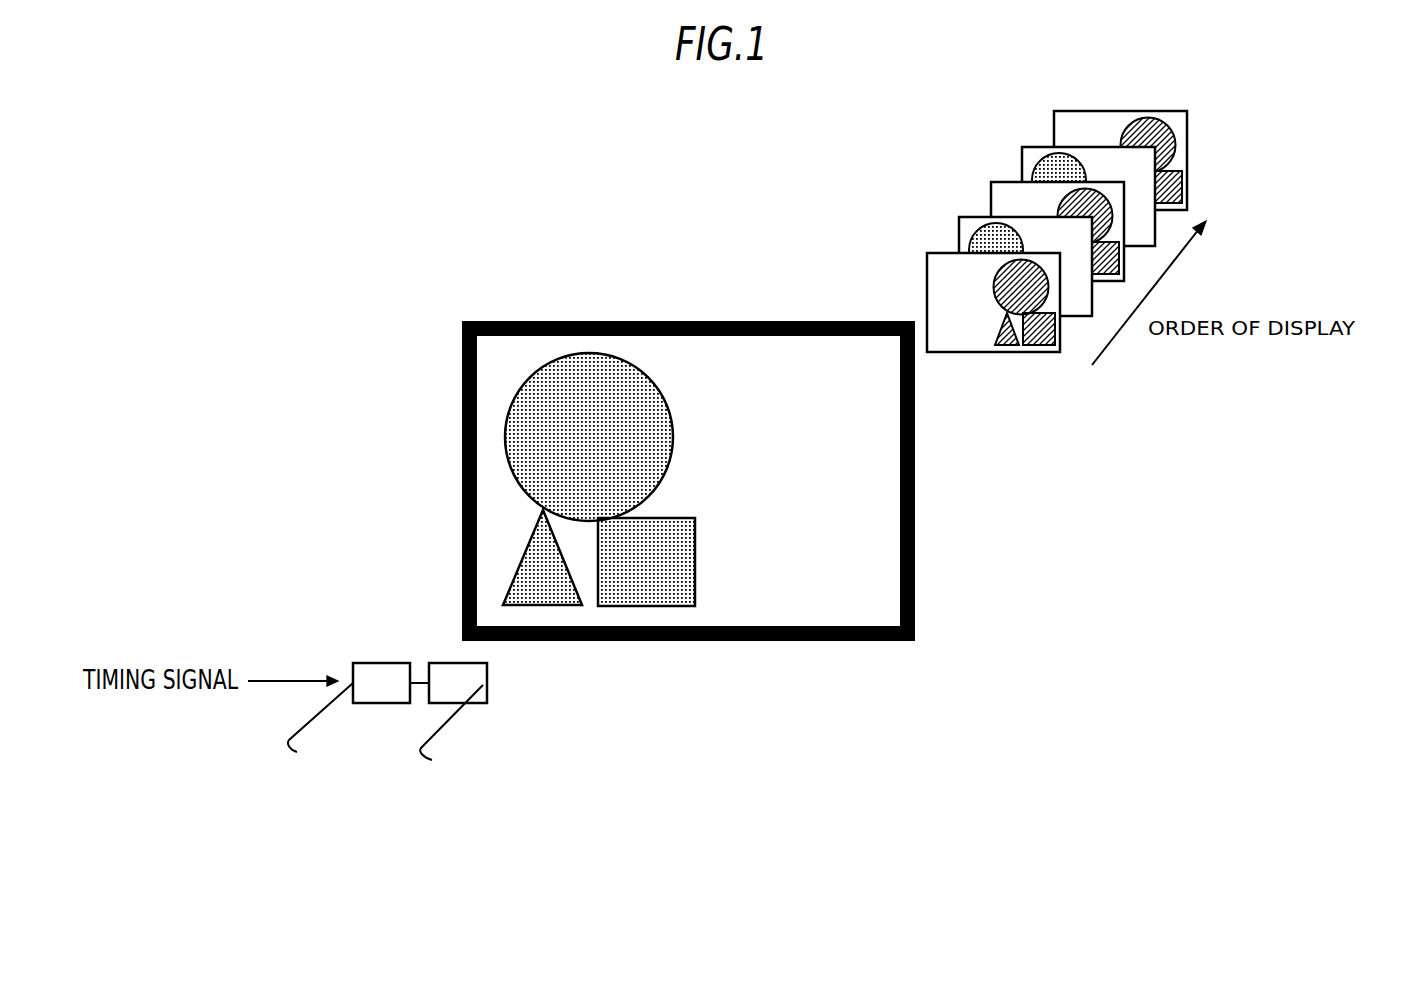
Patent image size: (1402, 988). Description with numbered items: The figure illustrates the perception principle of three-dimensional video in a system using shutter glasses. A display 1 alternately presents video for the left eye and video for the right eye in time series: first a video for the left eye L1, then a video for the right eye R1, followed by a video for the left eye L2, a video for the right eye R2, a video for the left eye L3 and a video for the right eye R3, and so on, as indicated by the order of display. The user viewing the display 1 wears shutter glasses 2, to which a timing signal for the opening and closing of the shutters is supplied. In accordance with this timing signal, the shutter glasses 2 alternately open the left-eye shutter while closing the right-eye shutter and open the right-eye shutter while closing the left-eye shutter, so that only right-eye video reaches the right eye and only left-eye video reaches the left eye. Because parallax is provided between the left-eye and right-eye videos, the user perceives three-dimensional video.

The display 1 is at (916, 635).
The shutter glasses 2 is at (433, 727).
The video for the left eye L1 is at (882, 538).
The video for the right eye R1 is at (926, 265).
The video for the left eye L2 is at (958, 229).
The video for the right eye R2 is at (990, 193).
The video for the left eye L3 is at (1021, 161).
The video for the right eye R3 is at (1053, 124).